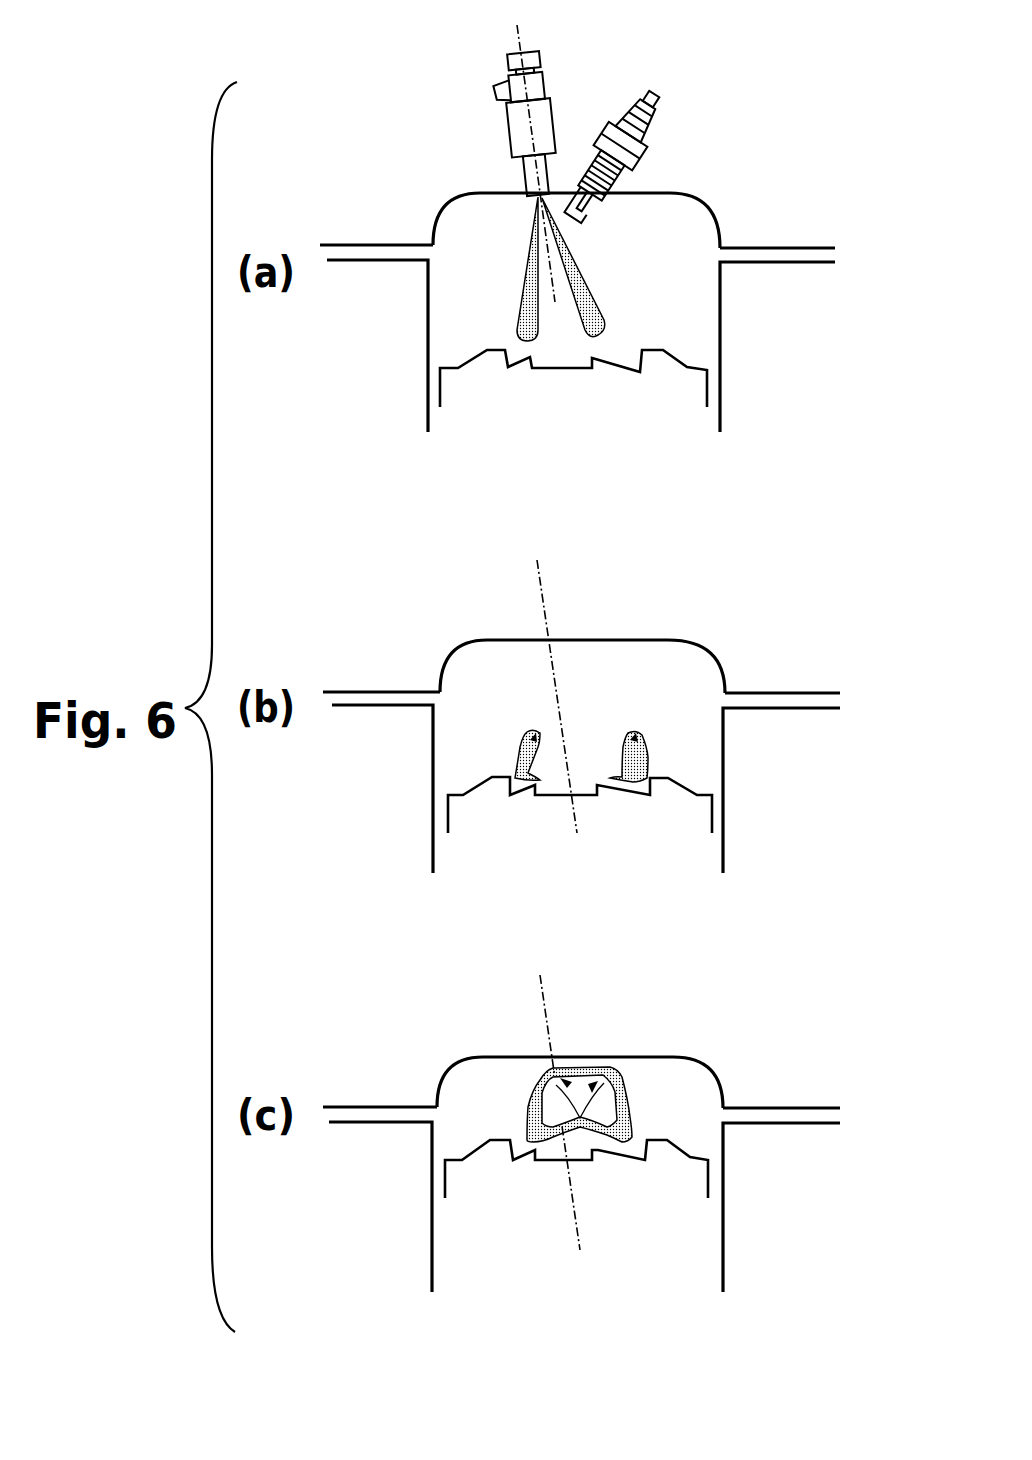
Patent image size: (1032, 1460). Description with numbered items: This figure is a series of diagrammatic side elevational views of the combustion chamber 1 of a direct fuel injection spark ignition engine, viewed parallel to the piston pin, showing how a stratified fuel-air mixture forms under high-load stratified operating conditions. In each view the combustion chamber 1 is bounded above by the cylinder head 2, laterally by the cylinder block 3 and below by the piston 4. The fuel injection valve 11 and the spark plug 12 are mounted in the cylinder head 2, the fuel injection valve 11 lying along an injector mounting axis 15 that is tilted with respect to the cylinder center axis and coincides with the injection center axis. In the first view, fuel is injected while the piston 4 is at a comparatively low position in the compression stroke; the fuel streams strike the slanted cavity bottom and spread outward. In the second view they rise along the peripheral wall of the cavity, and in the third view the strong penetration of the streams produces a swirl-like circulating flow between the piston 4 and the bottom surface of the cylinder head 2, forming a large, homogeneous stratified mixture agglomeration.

The combustion chamber 1 is at (631, 258).
The cylinder head 2 is at (757, 213).
The cylinder block 3 is at (768, 375).
The piston 4 is at (573, 433).
The fuel injection valve 11 is at (507, 118).
The spark plug 12 is at (637, 148).
The injector mounting axis 15 is at (517, 37).